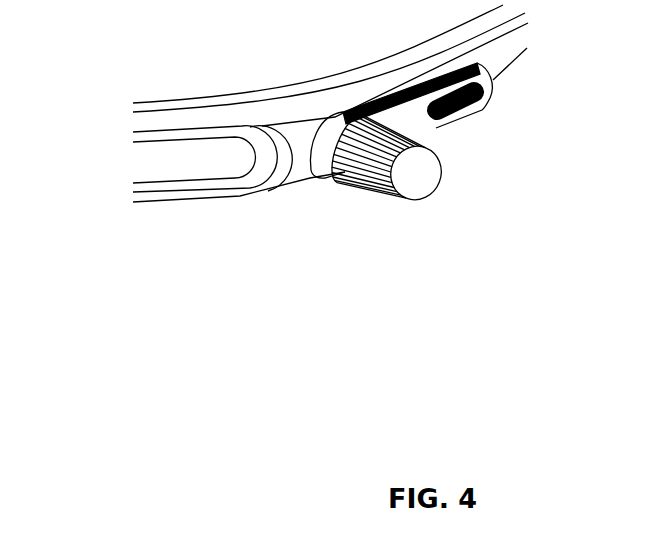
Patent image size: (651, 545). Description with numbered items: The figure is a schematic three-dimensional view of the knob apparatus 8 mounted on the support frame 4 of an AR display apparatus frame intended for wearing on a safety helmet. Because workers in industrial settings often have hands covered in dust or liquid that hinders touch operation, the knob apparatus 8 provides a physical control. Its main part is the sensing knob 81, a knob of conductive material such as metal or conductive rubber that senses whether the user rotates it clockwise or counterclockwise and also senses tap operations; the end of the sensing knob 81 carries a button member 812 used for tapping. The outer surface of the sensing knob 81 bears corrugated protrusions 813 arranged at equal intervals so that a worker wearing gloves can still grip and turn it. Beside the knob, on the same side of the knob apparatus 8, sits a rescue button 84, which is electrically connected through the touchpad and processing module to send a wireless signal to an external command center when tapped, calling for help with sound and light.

The support frame 4 is at (230, 192).
The knob apparatus 8 is at (452, 128).
The sensing knob 81 is at (372, 196).
The button member 812 is at (432, 171).
The corrugated protrusions 813 is at (400, 150).
The rescue button 84 is at (477, 108).